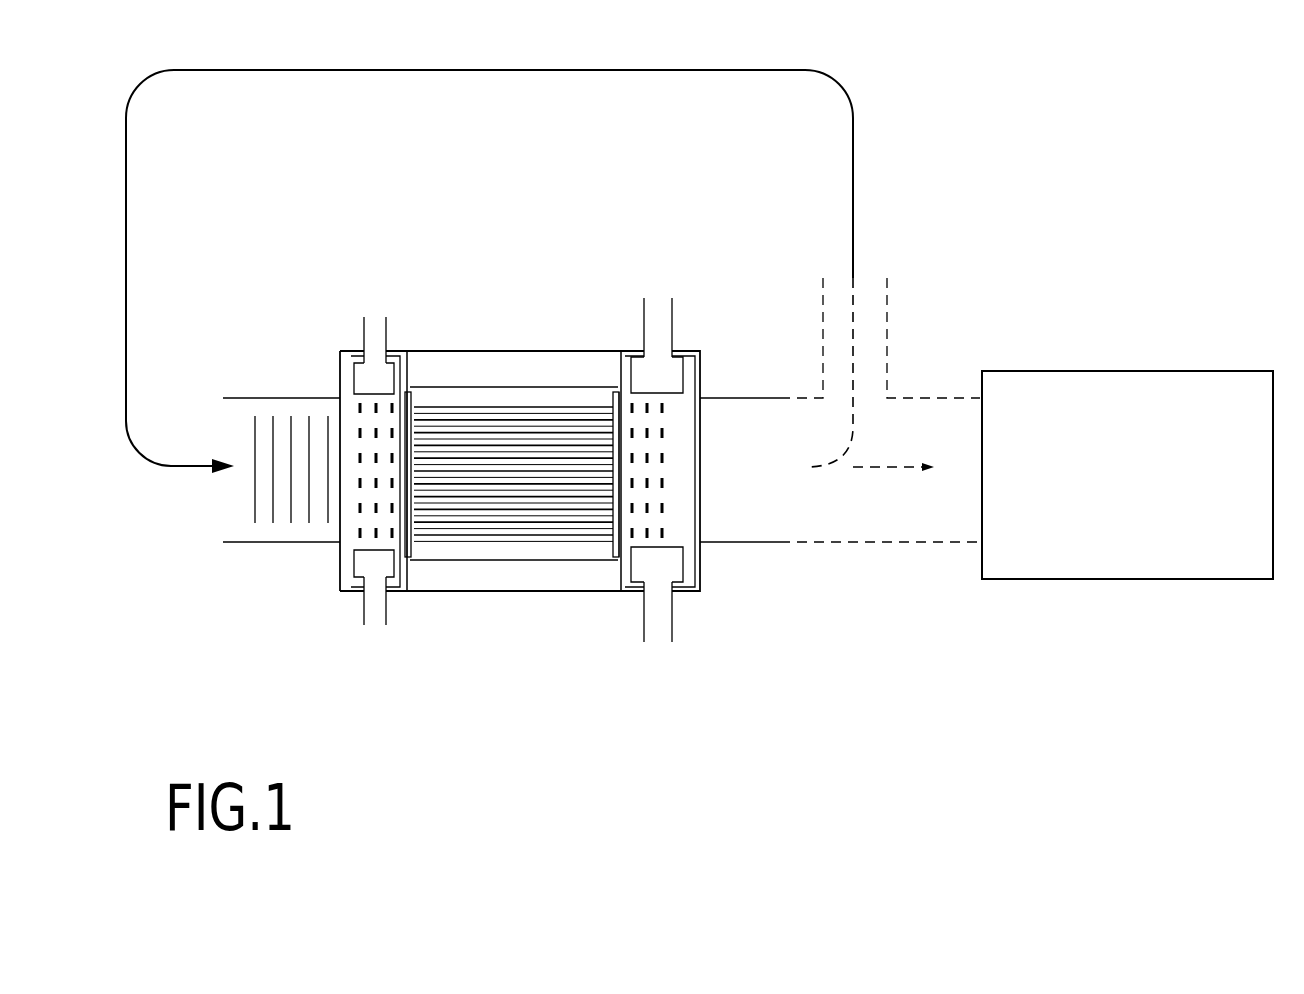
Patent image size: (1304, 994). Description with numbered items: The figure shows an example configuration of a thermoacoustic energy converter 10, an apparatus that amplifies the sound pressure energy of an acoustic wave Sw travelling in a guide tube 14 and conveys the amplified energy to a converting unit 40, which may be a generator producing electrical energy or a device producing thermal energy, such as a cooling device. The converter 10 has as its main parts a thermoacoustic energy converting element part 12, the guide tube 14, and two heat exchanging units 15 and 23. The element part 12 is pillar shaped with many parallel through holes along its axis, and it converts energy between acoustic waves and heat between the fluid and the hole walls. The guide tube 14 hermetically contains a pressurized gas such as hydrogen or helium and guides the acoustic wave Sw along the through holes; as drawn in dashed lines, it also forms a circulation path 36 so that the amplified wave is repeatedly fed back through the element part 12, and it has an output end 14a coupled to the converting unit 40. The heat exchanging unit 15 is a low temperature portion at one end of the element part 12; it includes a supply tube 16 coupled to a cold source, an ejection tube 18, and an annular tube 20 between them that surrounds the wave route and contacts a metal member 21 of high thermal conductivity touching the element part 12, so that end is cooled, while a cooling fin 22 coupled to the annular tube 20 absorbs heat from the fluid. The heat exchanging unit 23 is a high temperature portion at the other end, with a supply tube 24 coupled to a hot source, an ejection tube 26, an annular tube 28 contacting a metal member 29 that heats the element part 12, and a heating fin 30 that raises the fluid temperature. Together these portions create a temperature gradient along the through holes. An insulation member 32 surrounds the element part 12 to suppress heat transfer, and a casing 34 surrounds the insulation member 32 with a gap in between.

The thermoacoustic energy converter 10 is at (594, 690).
The thermoacoustic energy converting element part 12 is at (557, 533).
The guide tube 14 is at (232, 545).
The output end 14a is at (979, 395).
The heat exchanging unit (low temperature portion) 15 is at (312, 570).
The supply tube 16 is at (373, 320).
The ejection tube 18 is at (373, 620).
The annular tube 20 is at (360, 380).
The metal member 21 is at (412, 358).
The cooling fin 22 is at (375, 518).
The heat exchanging unit (high temperature portion) 23 is at (722, 607).
The supply tube 24 is at (658, 317).
The ejection tube 26 is at (658, 622).
The annular tube 28 is at (657, 376).
The metal member 29 is at (614, 392).
The heating fin 30 is at (653, 507).
The insulation member 32 is at (570, 400).
The casing 34 is at (480, 350).
The circulation path 36 is at (855, 127).
The converting unit 40 is at (1130, 371).
The acoustic wave Sw is at (258, 486).